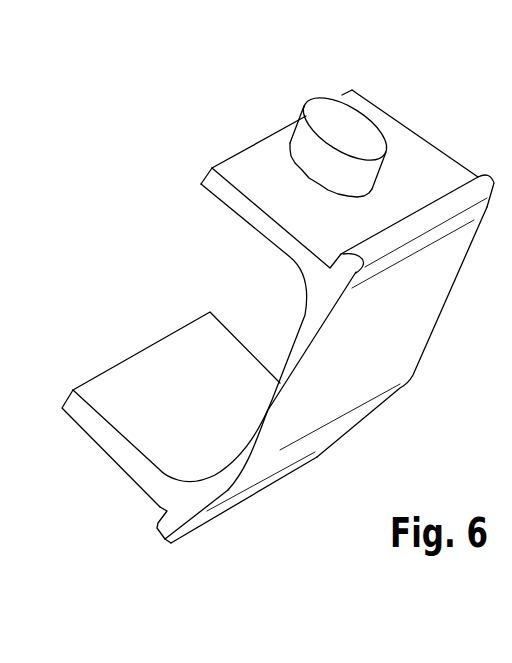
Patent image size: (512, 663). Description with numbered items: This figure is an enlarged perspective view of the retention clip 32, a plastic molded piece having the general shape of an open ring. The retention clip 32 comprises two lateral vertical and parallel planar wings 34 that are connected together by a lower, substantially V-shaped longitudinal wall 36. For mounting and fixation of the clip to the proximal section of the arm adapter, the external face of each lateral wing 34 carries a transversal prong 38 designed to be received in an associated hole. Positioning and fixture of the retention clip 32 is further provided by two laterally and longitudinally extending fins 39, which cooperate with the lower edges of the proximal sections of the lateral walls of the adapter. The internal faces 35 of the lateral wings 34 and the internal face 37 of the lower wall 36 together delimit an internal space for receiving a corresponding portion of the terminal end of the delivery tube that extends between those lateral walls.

The retention clip 32 is at (468, 135).
The lateral wings 34 is at (248, 180).
The internal faces of the lateral wings 35 is at (250, 230).
The lower longitudinal wall 36 is at (300, 366).
The internal face of the lower wall 37 is at (255, 433).
The transversal prong 38 is at (352, 136).
The fins 39 is at (397, 209).